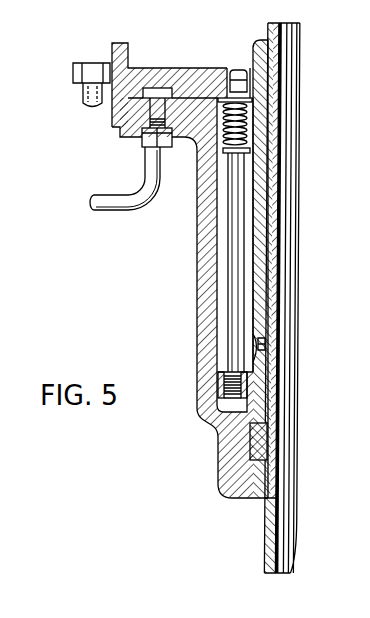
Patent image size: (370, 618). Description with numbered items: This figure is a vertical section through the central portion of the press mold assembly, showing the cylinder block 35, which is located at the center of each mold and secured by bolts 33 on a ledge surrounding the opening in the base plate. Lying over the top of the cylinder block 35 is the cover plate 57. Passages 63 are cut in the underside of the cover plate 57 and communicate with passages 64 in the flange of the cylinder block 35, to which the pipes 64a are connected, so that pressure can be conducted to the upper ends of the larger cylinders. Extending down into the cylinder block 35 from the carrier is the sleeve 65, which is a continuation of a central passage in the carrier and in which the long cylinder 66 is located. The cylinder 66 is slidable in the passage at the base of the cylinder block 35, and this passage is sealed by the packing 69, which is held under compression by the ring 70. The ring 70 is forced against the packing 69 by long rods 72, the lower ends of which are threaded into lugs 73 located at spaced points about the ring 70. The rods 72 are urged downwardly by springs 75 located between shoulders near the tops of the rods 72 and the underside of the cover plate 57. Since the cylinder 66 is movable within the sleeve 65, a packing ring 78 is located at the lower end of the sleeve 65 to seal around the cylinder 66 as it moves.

The bolts 33 is at (89, 64).
The cylinder block 35 is at (200, 280).
The cover plate 57 is at (148, 68).
The passages 63 is at (167, 85).
The passages 64 is at (164, 110).
The pipes 64a is at (108, 201).
The sleeve 65 is at (266, 192).
The long cylinder 66 is at (271, 540).
The packing 69 is at (266, 438).
The ring 70 is at (260, 399).
The long rods 72 is at (233, 238).
The lugs 73 is at (221, 384).
The springs 75 is at (246, 128).
The packing ring 78 is at (260, 343).